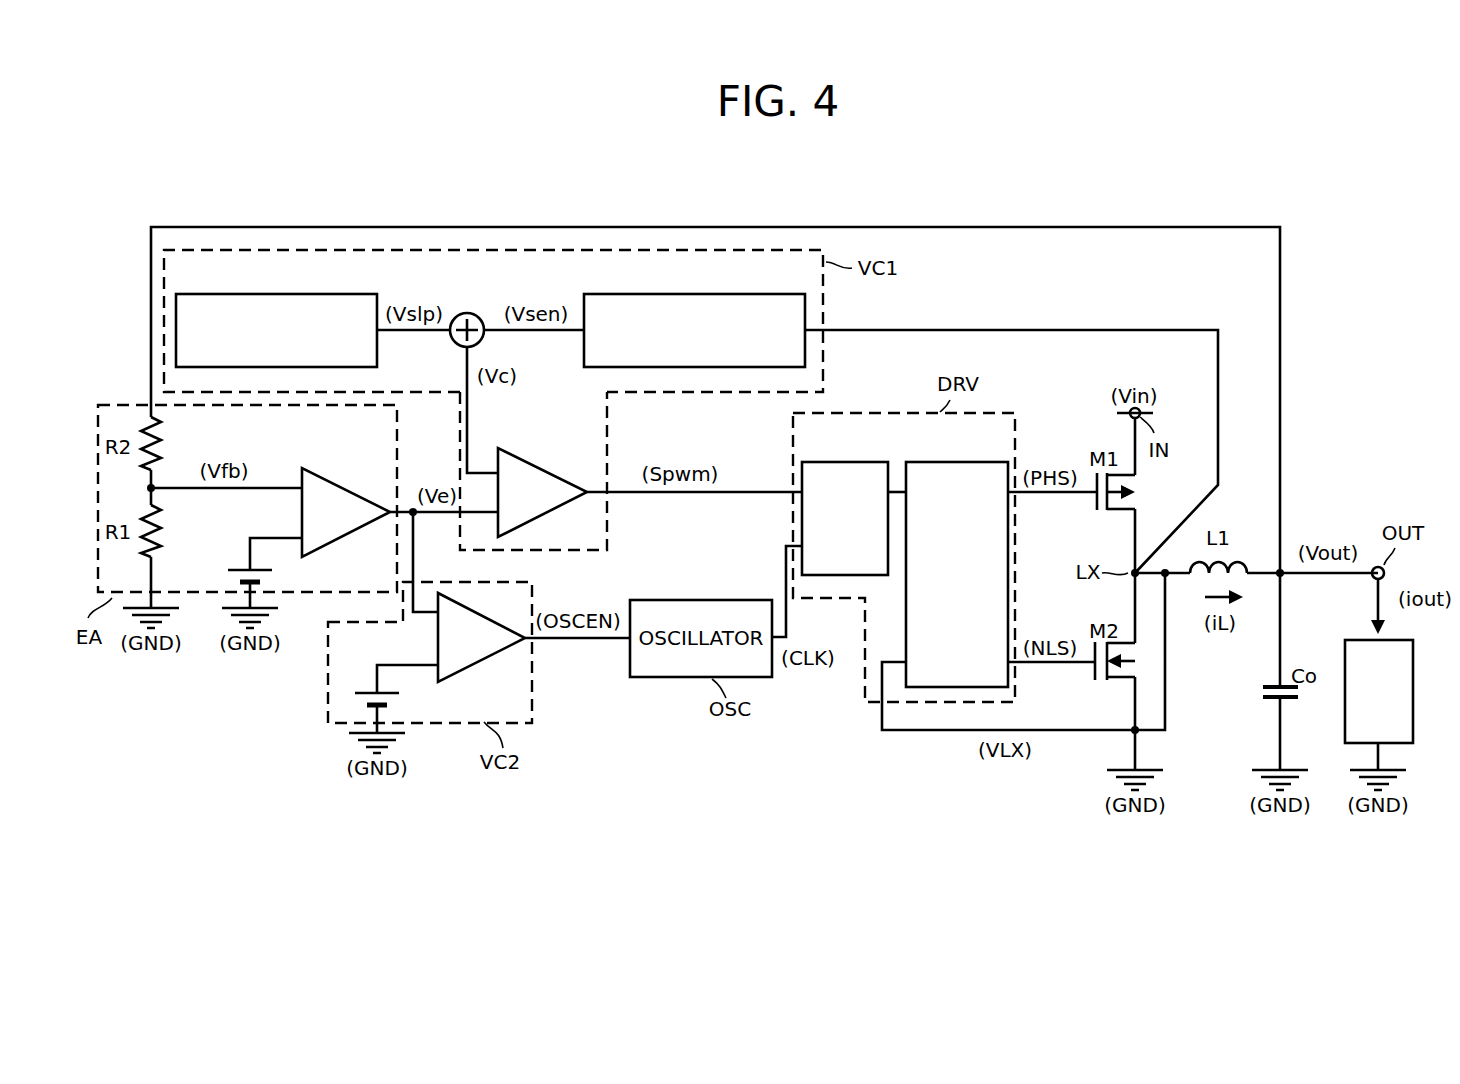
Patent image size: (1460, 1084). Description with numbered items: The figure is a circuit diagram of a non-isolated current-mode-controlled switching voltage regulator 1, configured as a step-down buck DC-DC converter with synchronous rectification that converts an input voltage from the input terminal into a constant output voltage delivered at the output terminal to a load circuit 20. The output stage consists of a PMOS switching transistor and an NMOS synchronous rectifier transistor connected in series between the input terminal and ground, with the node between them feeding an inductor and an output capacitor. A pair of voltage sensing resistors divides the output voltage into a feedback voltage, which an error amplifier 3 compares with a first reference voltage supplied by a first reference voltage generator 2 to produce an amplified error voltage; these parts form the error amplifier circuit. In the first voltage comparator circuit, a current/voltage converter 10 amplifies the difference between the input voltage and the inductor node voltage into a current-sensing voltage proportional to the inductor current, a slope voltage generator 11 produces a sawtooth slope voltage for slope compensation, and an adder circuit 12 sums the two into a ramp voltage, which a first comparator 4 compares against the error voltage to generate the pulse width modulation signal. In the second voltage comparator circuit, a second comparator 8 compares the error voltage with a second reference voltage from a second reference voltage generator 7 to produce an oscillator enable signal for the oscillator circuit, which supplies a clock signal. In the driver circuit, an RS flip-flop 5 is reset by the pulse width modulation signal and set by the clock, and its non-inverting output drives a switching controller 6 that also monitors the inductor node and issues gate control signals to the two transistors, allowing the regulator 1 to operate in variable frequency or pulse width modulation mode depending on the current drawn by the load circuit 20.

The switching voltage regulator 1 is at (881, 212).
The first reference voltage generator 2 is at (278, 579).
The error amplifier 3 is at (340, 538).
The first comparator 4 is at (542, 468).
The RS flip-flop 5 is at (855, 462).
The switching controller 6 is at (962, 462).
The second reference voltage generator 7 is at (406, 703).
The second comparator 8 is at (480, 660).
The current/voltage converter 10 is at (648, 293).
The slope voltage generator 11 is at (236, 293).
The adder circuit 12 is at (454, 345).
The load circuit 20 is at (1414, 663).